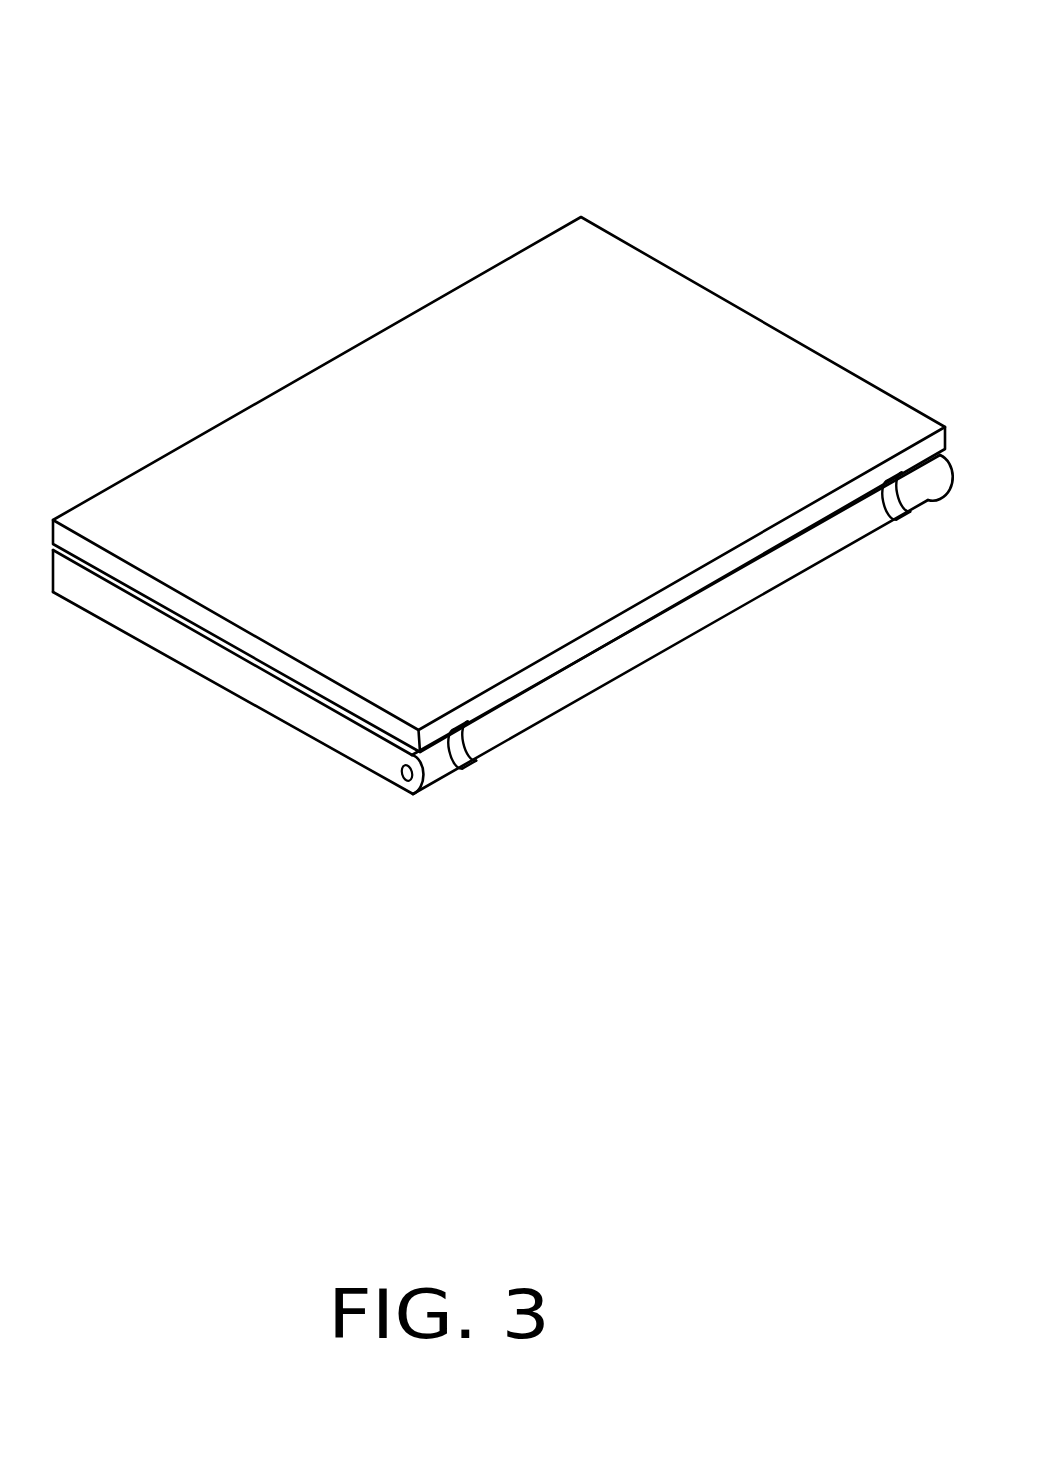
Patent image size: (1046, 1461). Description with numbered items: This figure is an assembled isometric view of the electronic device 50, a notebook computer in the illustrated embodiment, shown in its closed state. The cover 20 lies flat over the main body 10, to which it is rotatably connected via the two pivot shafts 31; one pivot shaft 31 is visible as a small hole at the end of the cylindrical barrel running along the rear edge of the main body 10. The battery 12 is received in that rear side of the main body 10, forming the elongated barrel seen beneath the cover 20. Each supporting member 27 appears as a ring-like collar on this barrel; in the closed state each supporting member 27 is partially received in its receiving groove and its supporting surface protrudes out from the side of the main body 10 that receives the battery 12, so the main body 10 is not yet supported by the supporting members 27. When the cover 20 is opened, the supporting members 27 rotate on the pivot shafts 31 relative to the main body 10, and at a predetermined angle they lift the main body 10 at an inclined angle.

The electronic device 50 is at (480, 47).
The cover 20 is at (702, 354).
The main body 10 is at (287, 700).
The battery 12 is at (790, 556).
The supporting member 27 is at (478, 768).
The pivot shaft 31 is at (397, 785).